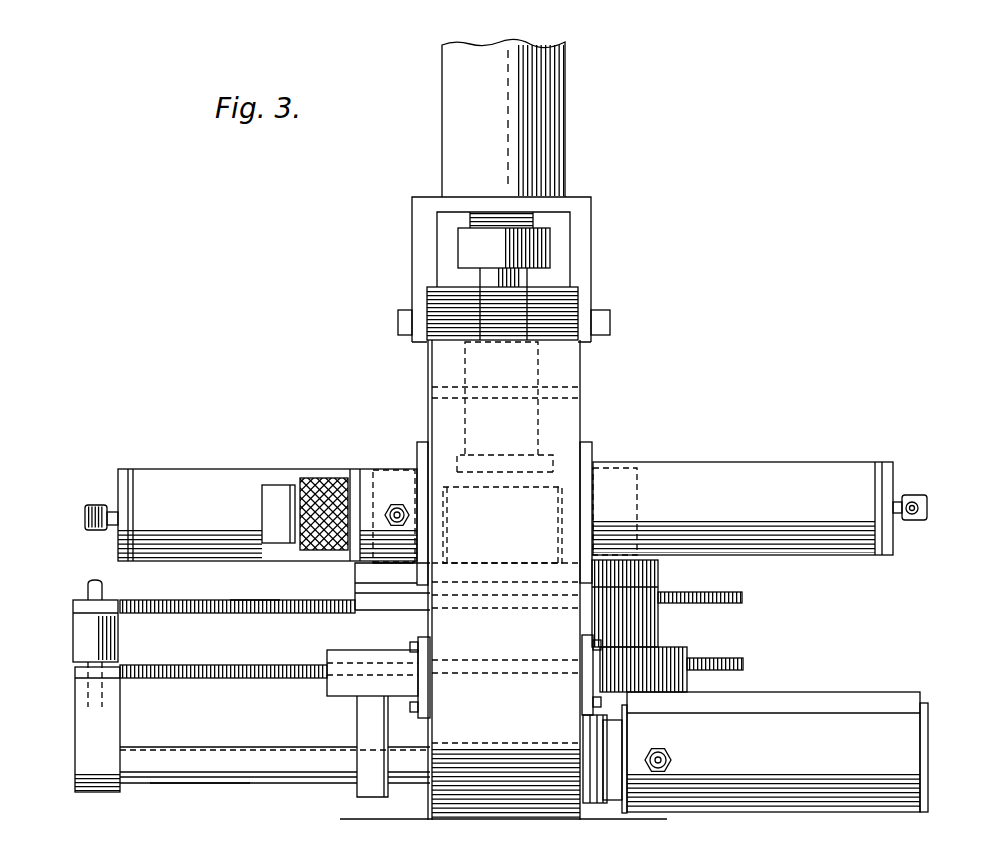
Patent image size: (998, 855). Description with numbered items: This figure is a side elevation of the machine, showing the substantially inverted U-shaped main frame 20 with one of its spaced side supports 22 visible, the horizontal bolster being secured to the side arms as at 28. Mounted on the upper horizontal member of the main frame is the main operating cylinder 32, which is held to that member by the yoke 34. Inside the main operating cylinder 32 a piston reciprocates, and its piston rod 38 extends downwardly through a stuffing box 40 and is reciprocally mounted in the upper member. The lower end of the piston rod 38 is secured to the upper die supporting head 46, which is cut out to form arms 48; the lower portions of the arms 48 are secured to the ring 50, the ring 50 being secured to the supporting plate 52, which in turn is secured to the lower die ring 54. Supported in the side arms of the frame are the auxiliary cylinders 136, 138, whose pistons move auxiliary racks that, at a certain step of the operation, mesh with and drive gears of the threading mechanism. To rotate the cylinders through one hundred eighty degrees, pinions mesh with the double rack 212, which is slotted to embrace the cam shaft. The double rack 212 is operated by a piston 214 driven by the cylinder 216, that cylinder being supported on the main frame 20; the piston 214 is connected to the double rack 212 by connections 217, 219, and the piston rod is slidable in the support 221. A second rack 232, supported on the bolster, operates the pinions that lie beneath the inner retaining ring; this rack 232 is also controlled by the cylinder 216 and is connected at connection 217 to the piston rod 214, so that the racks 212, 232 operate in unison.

The main operating cylinder 32 is at (565, 101).
The yoke 34 is at (591, 203).
The stuffing box 40 is at (550, 247).
The piston rod 38 is at (527, 280).
The side support 22 is at (580, 398).
The main frame 20 is at (567, 428).
The upper die supporting head 46 is at (447, 474).
The auxiliary cylinder 138 is at (205, 477).
The auxiliary cylinder 136 is at (747, 461).
The arms 48 is at (659, 566).
The ring 50 is at (655, 588).
The supporting plate 52 is at (658, 612).
The lower die ring 54 is at (658, 637).
The securing points 28 is at (430, 639).
The double rack 212 is at (157, 600).
The piston 214 is at (252, 600).
The connection 219 is at (73, 639).
The connection 217 is at (75, 718).
The rack 232 is at (172, 680).
The support 221 is at (357, 722).
The cylinder 216 is at (910, 748).